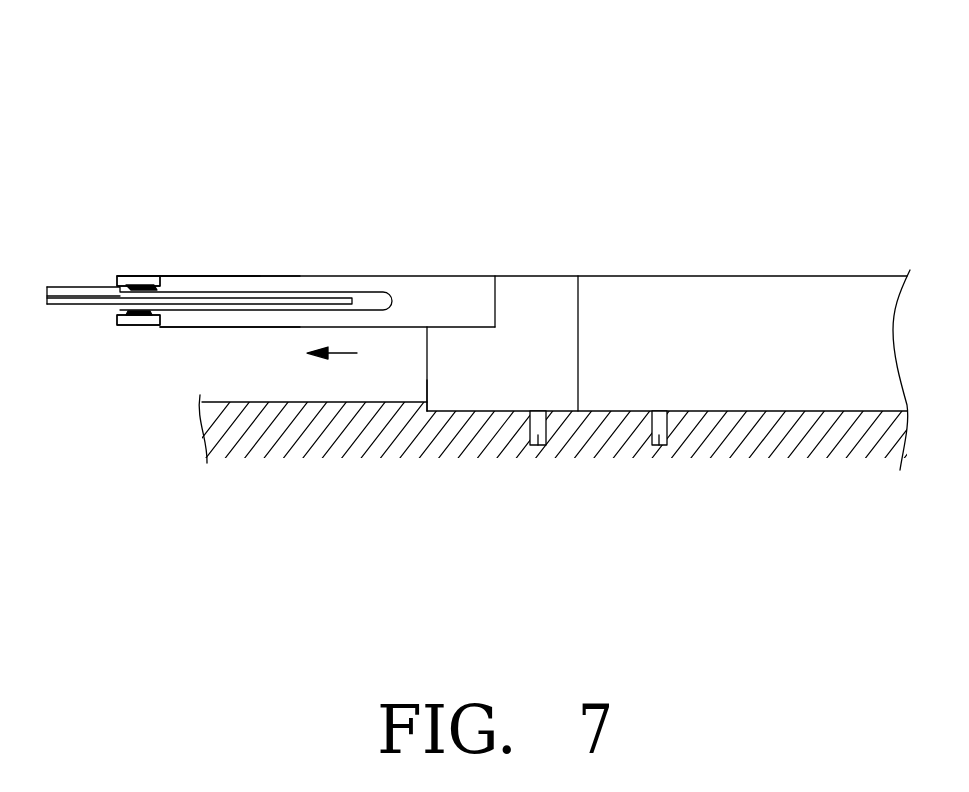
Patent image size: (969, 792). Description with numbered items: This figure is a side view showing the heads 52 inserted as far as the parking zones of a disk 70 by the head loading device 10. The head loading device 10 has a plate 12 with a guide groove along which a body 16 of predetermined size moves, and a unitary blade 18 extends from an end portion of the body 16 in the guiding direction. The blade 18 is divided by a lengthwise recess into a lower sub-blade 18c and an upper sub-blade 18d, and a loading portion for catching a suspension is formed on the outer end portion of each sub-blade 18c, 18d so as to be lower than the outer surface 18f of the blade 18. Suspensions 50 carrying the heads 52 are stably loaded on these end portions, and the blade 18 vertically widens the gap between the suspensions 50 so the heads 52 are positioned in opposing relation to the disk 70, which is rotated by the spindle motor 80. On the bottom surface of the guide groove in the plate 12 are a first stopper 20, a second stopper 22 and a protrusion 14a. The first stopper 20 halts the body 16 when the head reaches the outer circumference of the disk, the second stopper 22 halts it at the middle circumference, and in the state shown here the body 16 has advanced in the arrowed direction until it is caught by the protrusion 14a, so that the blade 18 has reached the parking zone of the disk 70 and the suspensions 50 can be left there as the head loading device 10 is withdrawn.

The head loading device 10 is at (548, 205).
The plate 12 is at (275, 435).
The protrusion 14a is at (436, 412).
The body 16 is at (692, 295).
The unitary blade 18 is at (290, 283).
The lower sub-blade 18c is at (240, 328).
The upper sub-blade 18d is at (212, 277).
The outer surface of the blade 18f is at (242, 277).
The first stopper 20 is at (660, 447).
The second stopper 22 is at (537, 447).
The suspension 50 is at (138, 280).
The magnetic head 52 is at (148, 286).
The hard disk 70 is at (88, 306).
The spindle motor 80 is at (75, 288).